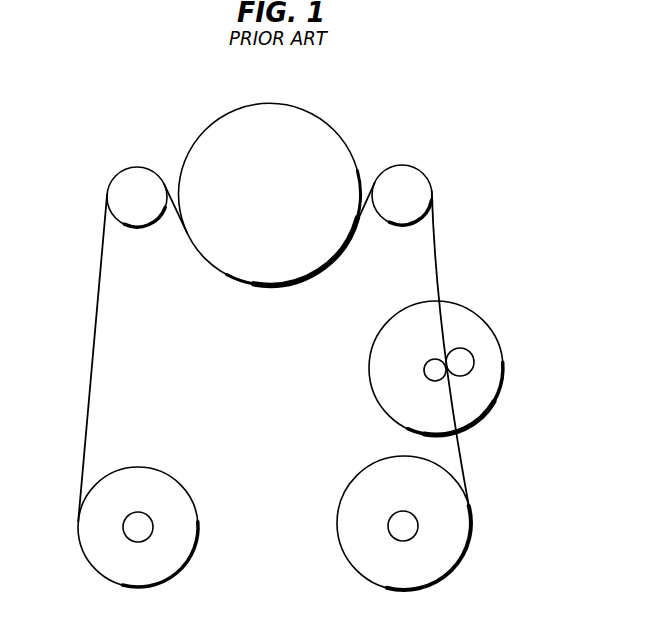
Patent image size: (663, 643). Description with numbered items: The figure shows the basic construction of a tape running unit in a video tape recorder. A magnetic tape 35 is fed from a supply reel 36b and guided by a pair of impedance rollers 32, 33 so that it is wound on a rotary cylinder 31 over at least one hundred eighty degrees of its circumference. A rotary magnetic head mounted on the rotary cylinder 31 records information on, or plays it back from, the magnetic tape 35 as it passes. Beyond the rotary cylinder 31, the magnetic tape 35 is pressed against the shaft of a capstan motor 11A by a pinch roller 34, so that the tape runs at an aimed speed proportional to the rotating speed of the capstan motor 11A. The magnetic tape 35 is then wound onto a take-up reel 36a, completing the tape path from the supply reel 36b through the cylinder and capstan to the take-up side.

The rotary cylinder 31 is at (310, 113).
The impedance roller 32 is at (138, 180).
The impedance roller 33 is at (413, 183).
The pinch roller 34 is at (455, 360).
The magnetic tape 35 is at (90, 390).
The capstan motor 11A is at (372, 400).
The take-up reel 36a is at (418, 592).
The supply reel 36b is at (167, 578).